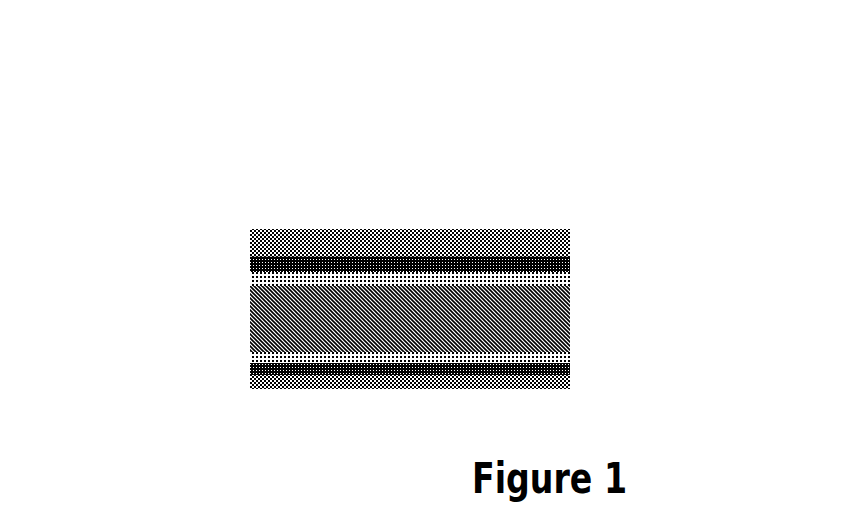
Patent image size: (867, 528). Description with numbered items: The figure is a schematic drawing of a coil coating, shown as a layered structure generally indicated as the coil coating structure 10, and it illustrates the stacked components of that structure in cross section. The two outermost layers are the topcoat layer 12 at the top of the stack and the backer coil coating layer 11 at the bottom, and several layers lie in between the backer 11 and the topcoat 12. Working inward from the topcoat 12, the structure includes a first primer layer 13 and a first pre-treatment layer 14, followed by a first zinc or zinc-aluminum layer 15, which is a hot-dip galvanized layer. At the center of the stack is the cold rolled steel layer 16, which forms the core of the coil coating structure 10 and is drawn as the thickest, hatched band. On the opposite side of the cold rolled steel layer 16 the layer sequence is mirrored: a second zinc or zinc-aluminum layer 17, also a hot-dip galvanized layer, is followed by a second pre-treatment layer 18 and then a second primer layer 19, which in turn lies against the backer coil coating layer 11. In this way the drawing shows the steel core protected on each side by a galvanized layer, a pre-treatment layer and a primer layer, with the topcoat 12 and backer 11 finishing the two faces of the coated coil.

The coil coating structure 10 is at (455, 82).
The backer coil coating layer 11 is at (377, 380).
The topcoat layer 12 is at (357, 233).
The first primer layer 13 is at (570, 262).
The first pre-treatment layer 14 is at (252, 268).
The first zinc or zinc-aluminum layer 15 is at (568, 278).
The cold rolled steel layer 16 is at (260, 313).
The second zinc or zinc-aluminum layer 17 is at (568, 360).
The second pre-treatment layer 18 is at (260, 367).
The second primer layer 19 is at (268, 373).